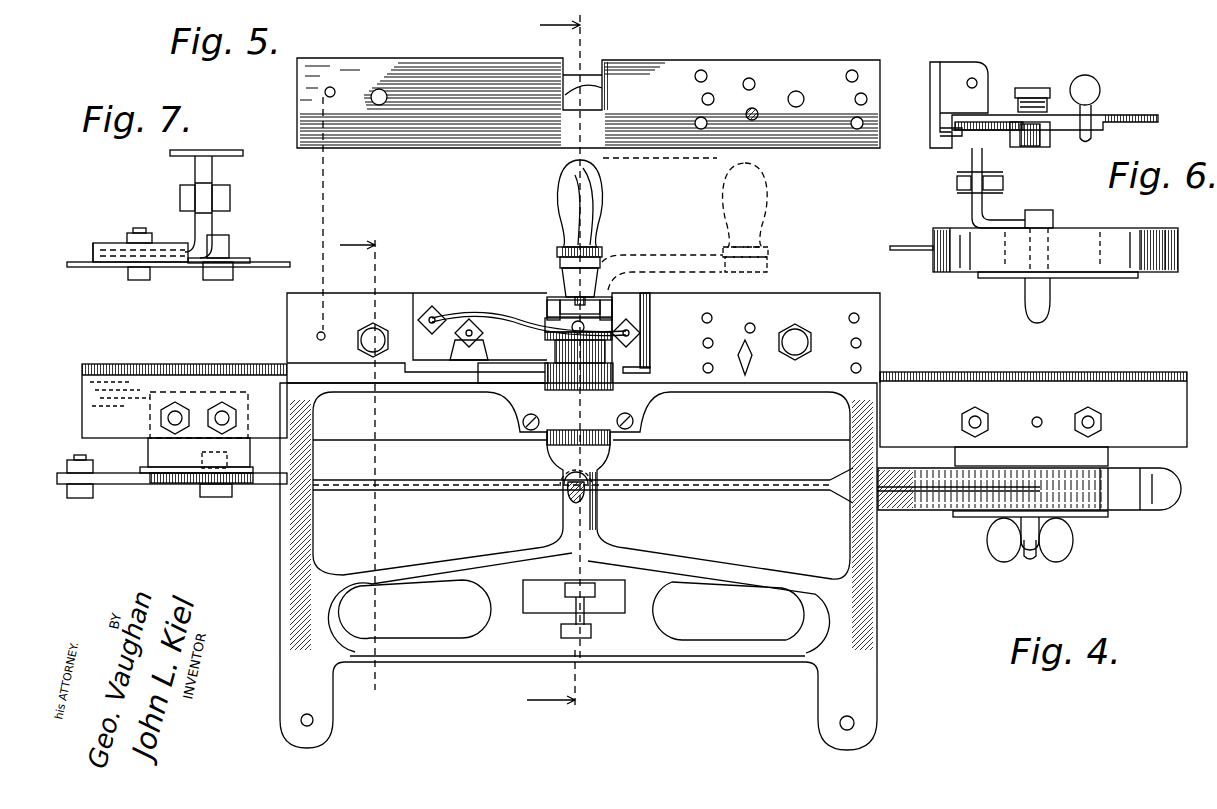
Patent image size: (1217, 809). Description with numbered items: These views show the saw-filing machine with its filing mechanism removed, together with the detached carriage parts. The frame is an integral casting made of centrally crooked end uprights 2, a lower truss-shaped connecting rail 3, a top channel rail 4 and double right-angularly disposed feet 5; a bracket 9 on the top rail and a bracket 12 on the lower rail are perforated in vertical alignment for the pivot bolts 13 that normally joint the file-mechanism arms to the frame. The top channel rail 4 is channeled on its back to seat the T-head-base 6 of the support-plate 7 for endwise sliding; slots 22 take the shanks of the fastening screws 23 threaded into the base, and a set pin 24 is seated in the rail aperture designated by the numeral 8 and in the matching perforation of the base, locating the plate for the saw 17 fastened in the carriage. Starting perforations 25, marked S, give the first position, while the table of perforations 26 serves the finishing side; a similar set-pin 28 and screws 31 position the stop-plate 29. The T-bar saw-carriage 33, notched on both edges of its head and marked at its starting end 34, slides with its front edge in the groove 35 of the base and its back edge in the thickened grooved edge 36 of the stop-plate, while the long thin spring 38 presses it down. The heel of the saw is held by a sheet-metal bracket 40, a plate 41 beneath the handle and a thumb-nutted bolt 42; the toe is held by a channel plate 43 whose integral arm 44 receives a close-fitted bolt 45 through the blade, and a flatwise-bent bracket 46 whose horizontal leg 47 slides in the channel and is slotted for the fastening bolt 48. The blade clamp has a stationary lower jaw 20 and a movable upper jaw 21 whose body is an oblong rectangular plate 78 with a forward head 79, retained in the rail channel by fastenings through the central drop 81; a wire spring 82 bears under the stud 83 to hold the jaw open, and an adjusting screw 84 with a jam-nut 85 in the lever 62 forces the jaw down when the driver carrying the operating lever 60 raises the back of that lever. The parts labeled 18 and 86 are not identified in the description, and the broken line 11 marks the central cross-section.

In FIG. 4, the end uprights 2 is at (282, 540).
In FIG. 4, the lower truss-shaped connecting rail 3 is at (581, 522).
In FIG. 4, the top channel rail 4 is at (440, 382).
In FIG. 4, the feet 5 is at (577, 704).
In FIG. 5, the T-head-base 6 is at (647, 72).
In FIG. 6, the T-head-base 6 is at (938, 62).
In FIG. 6, the support-plate 7 is at (1142, 114).
In FIG. 4, the broken line 8 is at (362, 459).
In FIG. 4, the bracket 9 is at (555, 335).
In FIG. 4, the broken line 11 is at (563, 369).
In FIG. 4, the bracket 12 is at (598, 630).
In FIG. 4, the pivot bolts 13 is at (575, 392).
In FIG. 7, the saw 17 is at (97, 262).
In FIG. 6, the saw 17 is at (915, 246).
In FIG. 4, the saw 17 is at (765, 492).
In FIG. 4, the bracket 18 is at (513, 375).
In FIG. 4, the stationary lower jaw 20 is at (567, 497).
In FIG. 4, the movable upper jaw 21 is at (563, 472).
In FIG. 4, the slots 22 is at (395, 330).
In FIG. 5, the fastening screws 23 is at (799, 92).
In FIG. 4, the fastening screws 23 is at (584, 341).
In FIG. 5, the set pin 24 is at (756, 109).
In FIG. 4, the set pin 24 is at (752, 368).
In FIG. 5, the perforations 25 is at (325, 91).
In FIG. 4, the perforations 25 is at (327, 334).
In FIG. 4, the table of perforations 26 is at (760, 312).
In FIG. 6, the set-pin 28 is at (1092, 82).
In FIG. 6, the stop-plate 29 is at (1045, 138).
In FIG. 6, the screws 31 is at (1035, 88).
In FIG. 7, the T-bar saw-carriage 33 is at (225, 146).
In FIG. 6, the T-bar saw-carriage 33 is at (975, 190).
In FIG. 4, the T-bar saw-carriage 33 is at (634, 405).
In FIG. 4, the starting end 34 is at (1033, 402).
In FIG. 6, the groove 35 is at (945, 132).
In FIG. 6, the thickened grooved edge 36 is at (1025, 142).
In FIG. 6, the long thin spring 38 is at (1000, 122).
In FIG. 6, the sheet-metal bracket 40 is at (1112, 225).
In FIG. 4, the sheet-metal bracket 40 is at (1090, 457).
In FIG. 6, the plate 41 is at (1120, 278).
In FIG. 4, the plate 41 is at (1095, 517).
In FIG. 6, the thumb-nutted bolt 42 is at (1048, 296).
In FIG. 4, the thumb-nutted bolt 42 is at (1030, 558).
In FIG. 7, the channel plate 43 is at (118, 240).
In FIG. 4, the channel plate 43 is at (145, 469).
In FIG. 7, the integral arm 44 is at (245, 258).
In FIG. 4, the integral arm 44 is at (113, 485).
In FIG. 7, the bolt 45 is at (220, 282).
In FIG. 4, the bolt 45 is at (80, 458).
In FIG. 7, the sheet metal bracket 46 is at (202, 232).
In FIG. 4, the sheet metal bracket 46 is at (199, 430).
In FIG. 7, the horizontal leg 47 is at (95, 248).
In FIG. 4, the horizontal leg 47 is at (190, 484).
In FIG. 7, the fastening bolt 48 is at (140, 231).
In FIG. 4, the fastening bolt 48 is at (232, 490).
In FIG. 4, the operating lever 60 is at (566, 255).
In FIG. 4, the lever 62 is at (608, 283).
In FIG. 4, the oblong rectangular plate 78 is at (545, 393).
In FIG. 4, the head 79 is at (560, 330).
In FIG. 4, the central drop 81 is at (578, 419).
In FIG. 4, the wire spring 82 is at (470, 316).
In FIG. 4, the stud 83 is at (570, 335).
In FIG. 4, the adjusting screw 84 is at (575, 297).
In FIG. 4, the jam-nut 85 is at (572, 303).
In FIG. 4, the yoke arm 86 is at (585, 318).